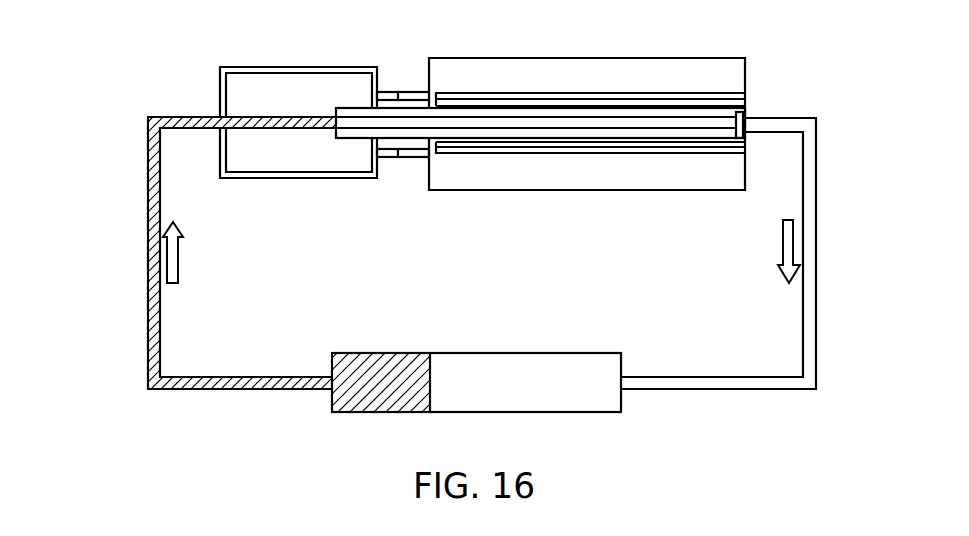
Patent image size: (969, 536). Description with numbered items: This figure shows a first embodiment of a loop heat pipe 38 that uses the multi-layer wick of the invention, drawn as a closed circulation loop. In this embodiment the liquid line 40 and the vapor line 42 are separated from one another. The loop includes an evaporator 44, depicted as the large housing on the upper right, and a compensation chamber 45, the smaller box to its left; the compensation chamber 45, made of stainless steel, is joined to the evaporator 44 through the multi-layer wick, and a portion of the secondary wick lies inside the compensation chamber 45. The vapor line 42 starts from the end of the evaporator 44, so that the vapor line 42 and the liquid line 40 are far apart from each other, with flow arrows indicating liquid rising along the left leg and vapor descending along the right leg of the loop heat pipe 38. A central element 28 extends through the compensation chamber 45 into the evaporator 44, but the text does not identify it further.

The tube 28 is at (450, 172).
The loop heat pipe 38 is at (99, 326).
The liquid line 40 is at (168, 252).
The vapor line 42 is at (790, 241).
The evaporator 44 is at (623, 72).
The compensation chamber 45 is at (241, 77).